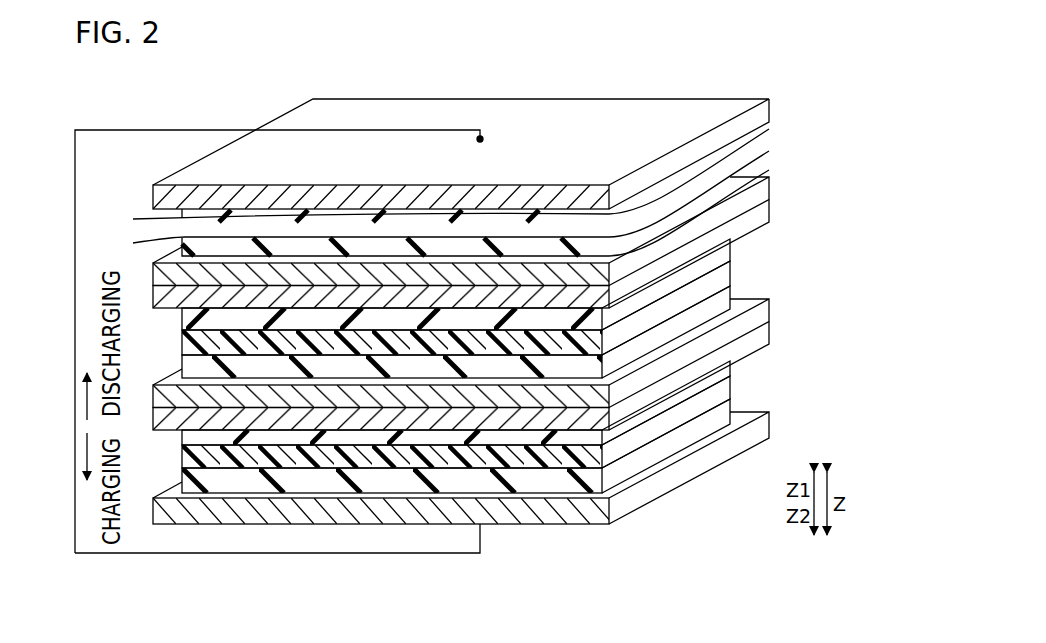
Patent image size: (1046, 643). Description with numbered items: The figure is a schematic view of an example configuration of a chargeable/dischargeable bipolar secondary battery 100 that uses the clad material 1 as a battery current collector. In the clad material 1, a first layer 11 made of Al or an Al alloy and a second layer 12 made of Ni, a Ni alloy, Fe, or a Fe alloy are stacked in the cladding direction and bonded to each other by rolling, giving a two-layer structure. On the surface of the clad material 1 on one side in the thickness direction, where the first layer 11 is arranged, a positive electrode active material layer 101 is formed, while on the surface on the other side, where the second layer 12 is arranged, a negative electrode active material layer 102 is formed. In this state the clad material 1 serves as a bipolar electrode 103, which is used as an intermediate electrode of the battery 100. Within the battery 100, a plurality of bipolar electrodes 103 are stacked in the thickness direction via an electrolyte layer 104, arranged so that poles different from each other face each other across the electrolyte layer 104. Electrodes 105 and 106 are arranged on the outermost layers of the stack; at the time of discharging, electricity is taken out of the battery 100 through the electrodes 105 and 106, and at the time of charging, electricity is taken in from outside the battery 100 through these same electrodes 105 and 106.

The bipolar secondary battery 100 is at (770, 81).
The electrode 105 is at (762, 111).
The electrode 106 is at (760, 422).
The negative electrode active material layer 102 is at (748, 152).
The positive electrode active material layer 101 is at (758, 170).
The electrolyte layer 104 is at (725, 277).
The first layer 11 is at (762, 196).
The second layer 12 is at (762, 218).
The clad material 1 is at (517, 303).
The bipolar electrode 103 is at (881, 163).